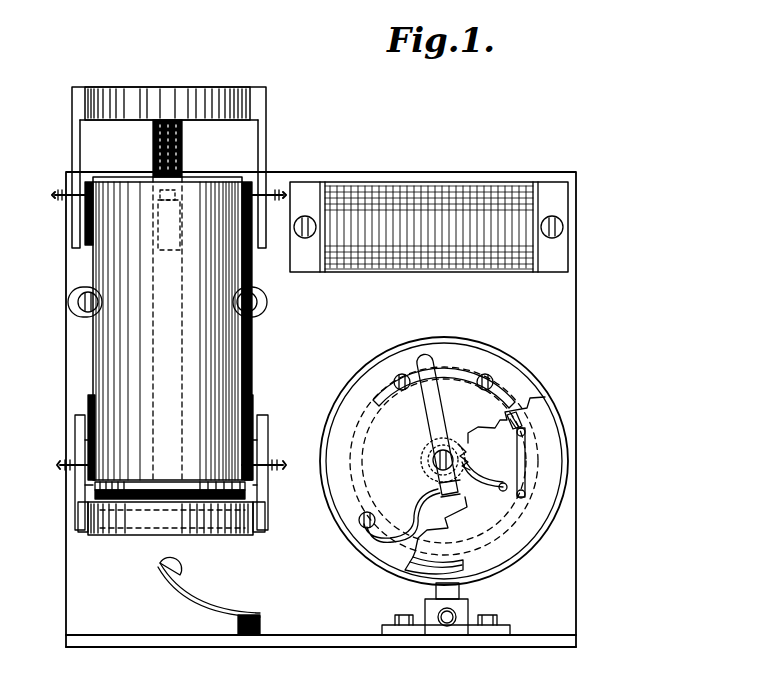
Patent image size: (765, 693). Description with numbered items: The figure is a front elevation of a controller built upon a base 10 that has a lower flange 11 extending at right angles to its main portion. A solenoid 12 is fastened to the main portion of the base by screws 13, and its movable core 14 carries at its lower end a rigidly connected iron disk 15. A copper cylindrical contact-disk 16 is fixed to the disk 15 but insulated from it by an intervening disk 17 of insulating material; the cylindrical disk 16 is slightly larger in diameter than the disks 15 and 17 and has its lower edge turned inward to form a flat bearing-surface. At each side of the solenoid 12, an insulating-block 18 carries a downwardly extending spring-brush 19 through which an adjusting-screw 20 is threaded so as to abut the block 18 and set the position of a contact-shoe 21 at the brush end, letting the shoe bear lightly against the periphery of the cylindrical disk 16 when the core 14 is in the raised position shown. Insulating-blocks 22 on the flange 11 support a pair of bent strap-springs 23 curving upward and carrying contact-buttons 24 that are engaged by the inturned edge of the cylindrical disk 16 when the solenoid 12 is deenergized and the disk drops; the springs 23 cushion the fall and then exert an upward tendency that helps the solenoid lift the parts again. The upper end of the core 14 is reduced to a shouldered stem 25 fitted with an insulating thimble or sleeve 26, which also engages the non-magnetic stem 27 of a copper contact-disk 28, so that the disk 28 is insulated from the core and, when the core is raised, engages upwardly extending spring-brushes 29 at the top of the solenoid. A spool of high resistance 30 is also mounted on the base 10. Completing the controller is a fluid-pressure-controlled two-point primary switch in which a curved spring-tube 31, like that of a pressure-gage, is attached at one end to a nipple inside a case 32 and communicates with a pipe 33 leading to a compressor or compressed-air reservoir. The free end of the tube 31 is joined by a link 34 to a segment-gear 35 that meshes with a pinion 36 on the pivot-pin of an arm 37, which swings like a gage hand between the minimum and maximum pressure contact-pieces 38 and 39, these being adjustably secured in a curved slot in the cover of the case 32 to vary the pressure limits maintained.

The base 10 is at (577, 350).
The lower flange 11 is at (350, 647).
The solenoid 12 is at (93, 353).
The screws 13 is at (70, 303).
The movable core 14 is at (162, 352).
The disk 15 is at (97, 486).
The cylindrical contact-disk 16 is at (153, 517).
The insulating disk 17 is at (97, 495).
The insulating-block 18 is at (88, 402).
The spring-brush 19 is at (76, 430).
The adjusting-screw 20 is at (60, 462).
The contact-shoe 21 is at (80, 532).
The insulating-blocks 22 is at (238, 628).
The bent strap-springs 23 is at (210, 600).
The contact-buttons 24 is at (183, 566).
The shouldered stem 25 is at (162, 238).
The insulating thimble or sleeve 26 is at (182, 155).
The non-magnetic stem 27 is at (161, 184).
The contact-disk 28 is at (166, 97).
The spring-brushes 29 is at (75, 148).
The spool of high resistance 30 is at (464, 272).
The curved spring-tube 31 is at (438, 558).
The case 32 is at (538, 546).
The pipe 33 is at (460, 590).
The link 34 is at (526, 462).
The segment-gear 35 is at (503, 468).
The pinion 36 is at (470, 452).
The arm 37 is at (426, 428).
The minimum pressure contact-piece 38 is at (393, 383).
The maximum pressure contact-piece 39 is at (494, 383).